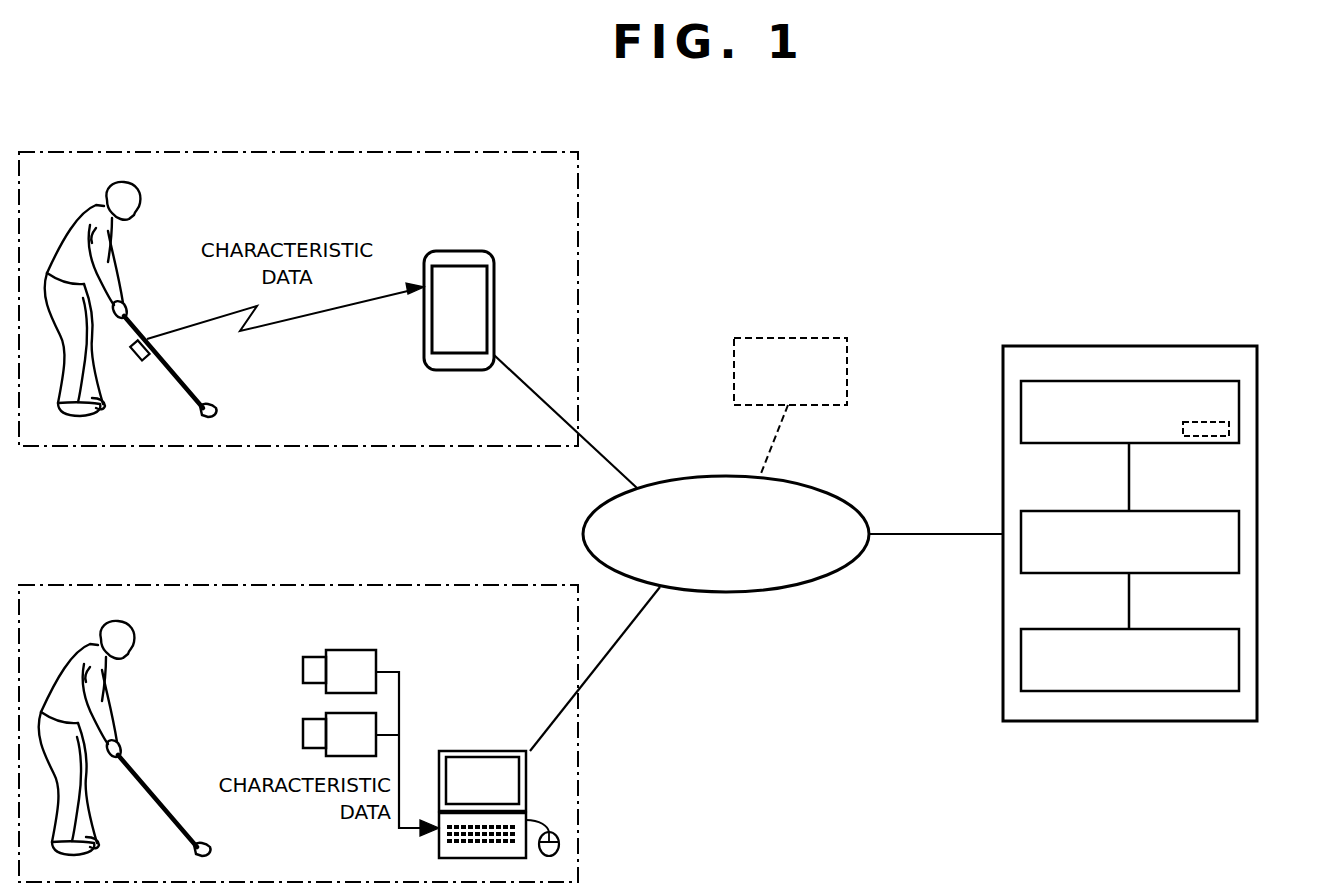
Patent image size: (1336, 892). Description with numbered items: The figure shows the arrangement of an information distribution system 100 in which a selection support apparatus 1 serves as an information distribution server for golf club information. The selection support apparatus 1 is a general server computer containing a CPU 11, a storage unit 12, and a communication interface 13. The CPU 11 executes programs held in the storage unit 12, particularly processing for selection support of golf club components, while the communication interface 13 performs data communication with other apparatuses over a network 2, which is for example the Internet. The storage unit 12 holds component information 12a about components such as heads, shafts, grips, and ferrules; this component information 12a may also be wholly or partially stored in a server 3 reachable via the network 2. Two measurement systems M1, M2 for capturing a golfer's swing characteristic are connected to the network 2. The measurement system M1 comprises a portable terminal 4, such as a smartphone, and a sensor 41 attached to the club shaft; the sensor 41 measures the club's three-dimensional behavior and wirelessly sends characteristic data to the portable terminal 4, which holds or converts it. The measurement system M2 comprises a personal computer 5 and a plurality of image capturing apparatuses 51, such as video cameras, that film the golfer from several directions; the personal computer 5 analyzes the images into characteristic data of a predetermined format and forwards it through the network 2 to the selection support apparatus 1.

The information distribution system 100 is at (1058, 150).
The selection support apparatus 1 is at (1183, 346).
The CPU 11 is at (1240, 531).
The storage unit 12 is at (1240, 405).
The component information 12a is at (1232, 430).
The communication interface 13 is at (1240, 656).
The network 2 is at (786, 590).
The server 3 is at (817, 337).
The portable terminal 4 is at (460, 250).
The personal computer 5 is at (480, 750).
The image capturing apparatus 51 is at (326, 650).
The sensor 41 is at (144, 360).
The measurement system M1 is at (579, 230).
The measurement system M2 is at (579, 767).